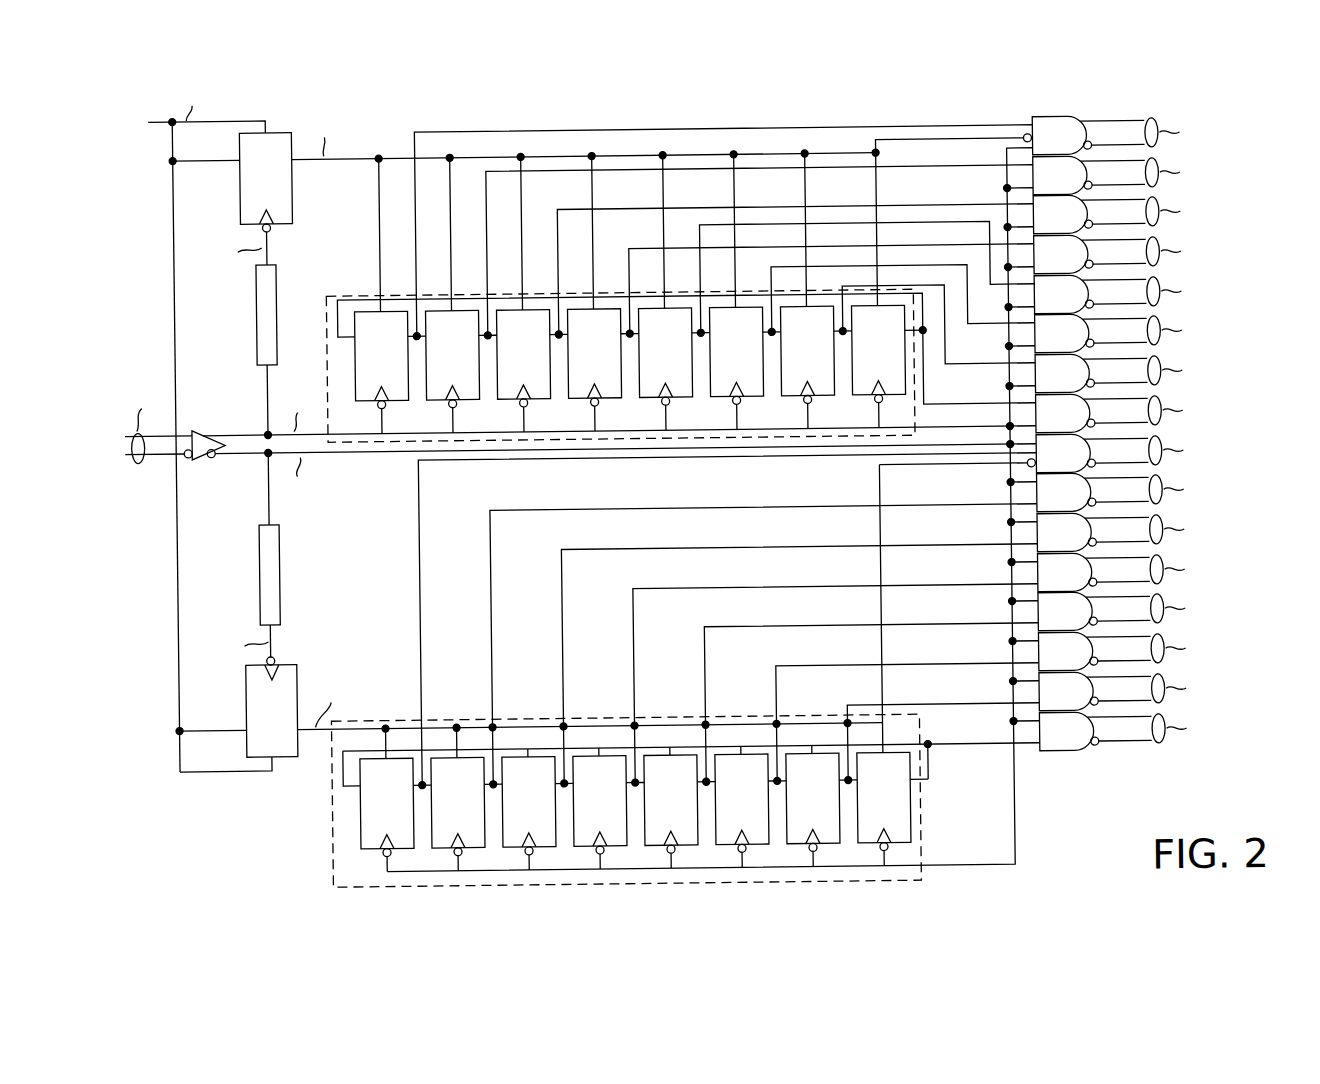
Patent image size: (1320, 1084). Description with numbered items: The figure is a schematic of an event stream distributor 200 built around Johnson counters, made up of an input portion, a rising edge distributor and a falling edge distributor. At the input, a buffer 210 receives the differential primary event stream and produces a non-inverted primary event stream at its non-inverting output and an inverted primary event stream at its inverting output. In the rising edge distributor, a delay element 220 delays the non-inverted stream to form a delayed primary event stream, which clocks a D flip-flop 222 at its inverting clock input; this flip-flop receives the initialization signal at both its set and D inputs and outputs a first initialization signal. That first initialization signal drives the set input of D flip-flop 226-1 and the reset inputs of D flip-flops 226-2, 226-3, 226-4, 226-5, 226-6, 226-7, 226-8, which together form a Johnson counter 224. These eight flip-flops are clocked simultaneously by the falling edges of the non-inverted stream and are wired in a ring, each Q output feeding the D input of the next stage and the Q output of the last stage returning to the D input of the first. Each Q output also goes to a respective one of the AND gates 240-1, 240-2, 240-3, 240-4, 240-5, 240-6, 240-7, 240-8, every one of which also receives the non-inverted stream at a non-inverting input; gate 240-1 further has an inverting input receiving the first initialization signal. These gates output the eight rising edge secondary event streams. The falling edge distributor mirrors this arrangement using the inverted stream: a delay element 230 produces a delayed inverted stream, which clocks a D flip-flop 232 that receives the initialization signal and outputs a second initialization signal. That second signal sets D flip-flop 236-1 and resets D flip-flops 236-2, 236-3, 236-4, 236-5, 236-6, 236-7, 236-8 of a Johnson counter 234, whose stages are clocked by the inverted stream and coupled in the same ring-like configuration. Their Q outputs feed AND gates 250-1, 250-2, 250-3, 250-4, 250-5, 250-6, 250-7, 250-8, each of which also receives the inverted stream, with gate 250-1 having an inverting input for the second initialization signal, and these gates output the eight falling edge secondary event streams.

The event stream distributor 200 is at (794, 113).
The buffer 210 is at (192, 425).
The delay element 220 is at (278, 275).
The D flip-flop 222 is at (287, 132).
The Johnson counter 224 is at (362, 446).
The D flip-flop 226-1 is at (382, 360).
The D flip-flop 226-2 is at (453, 359).
The D flip-flop 226-3 is at (524, 359).
The D flip-flop 226-4 is at (595, 358).
The D flip-flop 226-5 is at (666, 357).
The D flip-flop 226-6 is at (736, 356).
The D flip-flop 226-7 is at (807, 355).
The D flip-flop 226-8 is at (878, 354).
The delay element 230 is at (280, 537).
The D flip-flop 232 is at (292, 662).
The Johnson counter 234 is at (328, 872).
The D flip-flop 236-1 is at (387, 807).
The D flip-flop 236-2 is at (458, 806).
The D flip-flop 236-3 is at (529, 806).
The D flip-flop 236-4 is at (600, 805).
The D flip-flop 236-5 is at (671, 804).
The D flip-flop 236-6 is at (742, 803).
The D flip-flop 236-7 is at (813, 802).
The D flip-flop 236-8 is at (884, 801).
The AND gate 240-1 is at (1137, 134).
The AND gate 240-2 is at (1138, 174).
The AND gate 240-3 is at (1138, 213).
The AND gate 240-4 is at (1139, 253).
The AND gate 240-5 is at (1139, 293).
The AND gate 240-6 is at (1140, 332).
The AND gate 240-7 is at (1140, 372).
The AND gate 240-8 is at (1141, 412).
The AND gate 250-1 is at (1140, 452).
The AND gate 250-2 is at (1141, 491).
The AND gate 250-3 is at (1141, 531).
The AND gate 250-4 is at (1141, 571).
The AND gate 250-5 is at (1142, 610).
The AND gate 250-6 is at (1142, 650).
The AND gate 250-7 is at (1143, 690).
The AND gate 250-8 is at (1143, 730).